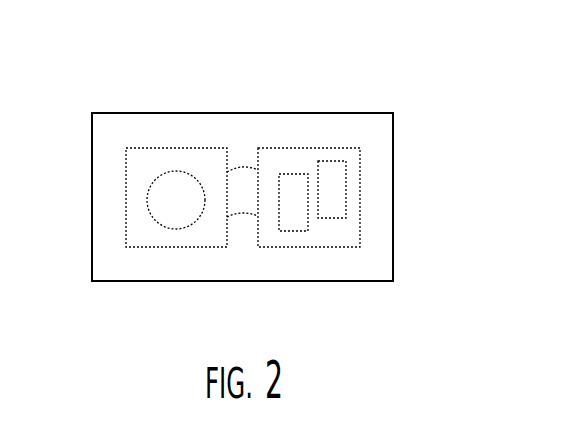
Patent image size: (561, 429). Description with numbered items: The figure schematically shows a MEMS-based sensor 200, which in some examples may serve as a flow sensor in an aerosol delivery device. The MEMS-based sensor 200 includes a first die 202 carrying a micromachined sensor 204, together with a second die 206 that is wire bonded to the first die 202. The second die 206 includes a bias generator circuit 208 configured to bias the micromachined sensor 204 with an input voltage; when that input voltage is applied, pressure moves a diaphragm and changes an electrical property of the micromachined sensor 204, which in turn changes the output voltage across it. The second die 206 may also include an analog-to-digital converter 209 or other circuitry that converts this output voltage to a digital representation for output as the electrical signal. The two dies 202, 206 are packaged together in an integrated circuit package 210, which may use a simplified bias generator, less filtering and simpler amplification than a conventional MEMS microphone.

The MEMS-based sensor 200 is at (241, 52).
The integrated circuit package 210 is at (168, 113).
The first die 202 is at (126, 198).
The micromachined sensor 204 is at (167, 228).
The second die 206 is at (360, 215).
The bias generator circuit 208 is at (332, 160).
The analog-to-digital converter 209 is at (293, 231).